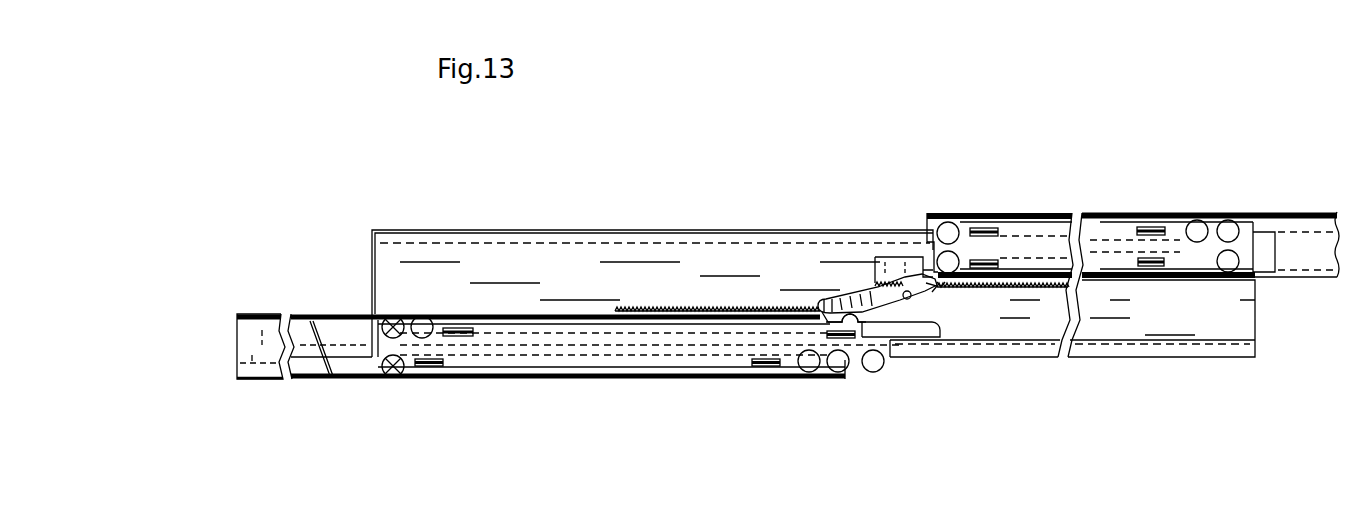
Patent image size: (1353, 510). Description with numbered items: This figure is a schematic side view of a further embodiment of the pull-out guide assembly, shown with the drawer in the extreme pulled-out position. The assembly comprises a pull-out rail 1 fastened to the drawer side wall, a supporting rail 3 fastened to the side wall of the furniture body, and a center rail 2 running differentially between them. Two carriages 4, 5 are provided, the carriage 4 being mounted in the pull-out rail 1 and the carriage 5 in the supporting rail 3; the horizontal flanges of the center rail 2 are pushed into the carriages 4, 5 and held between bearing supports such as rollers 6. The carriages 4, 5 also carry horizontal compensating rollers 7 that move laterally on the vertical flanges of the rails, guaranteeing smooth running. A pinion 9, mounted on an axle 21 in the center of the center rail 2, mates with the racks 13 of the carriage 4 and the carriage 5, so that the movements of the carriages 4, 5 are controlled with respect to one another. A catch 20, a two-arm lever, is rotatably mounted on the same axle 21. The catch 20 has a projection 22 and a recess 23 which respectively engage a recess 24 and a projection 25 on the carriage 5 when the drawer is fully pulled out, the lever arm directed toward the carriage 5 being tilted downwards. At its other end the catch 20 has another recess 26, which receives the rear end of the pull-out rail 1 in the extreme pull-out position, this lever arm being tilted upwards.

The pull-out rail 1 is at (1292, 230).
The center rail 2 is at (480, 265).
The supporting rail 3 is at (308, 363).
The carriage 4 is at (1030, 213).
The carriage 5 is at (612, 362).
The rollers 6 is at (950, 212).
The horizontal compensating rollers 7 is at (982, 213).
The pinion 9 is at (905, 257).
The racks 13 is at (768, 303).
The catch 20 is at (868, 302).
The axle 21 is at (893, 284).
The projection 22 is at (847, 323).
The recess 23 is at (864, 298).
The recess 24 is at (834, 300).
The projection 25 is at (858, 350).
The recess 26 is at (940, 286).